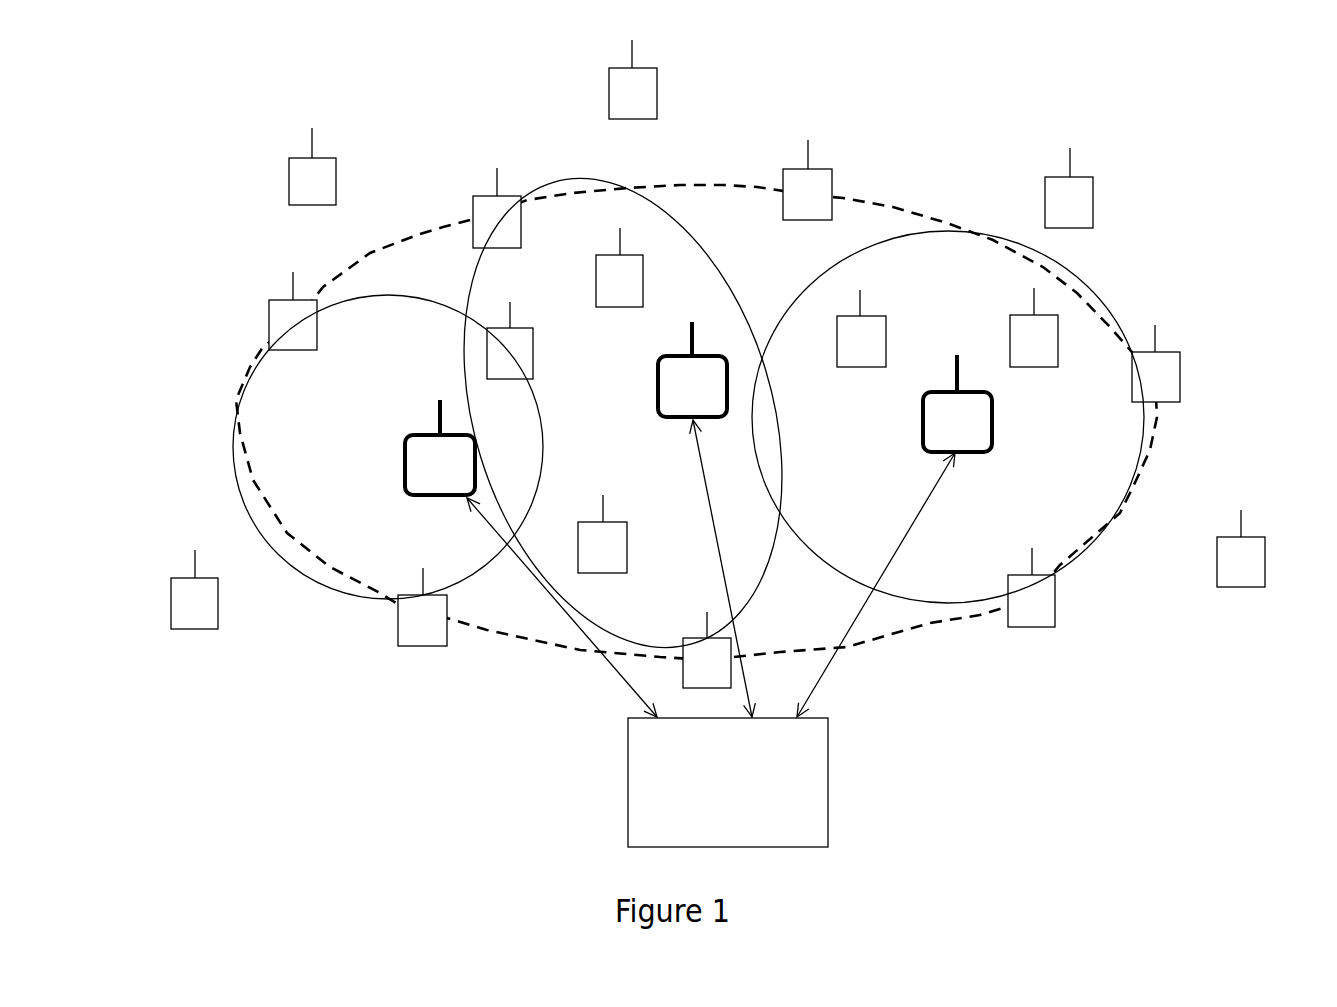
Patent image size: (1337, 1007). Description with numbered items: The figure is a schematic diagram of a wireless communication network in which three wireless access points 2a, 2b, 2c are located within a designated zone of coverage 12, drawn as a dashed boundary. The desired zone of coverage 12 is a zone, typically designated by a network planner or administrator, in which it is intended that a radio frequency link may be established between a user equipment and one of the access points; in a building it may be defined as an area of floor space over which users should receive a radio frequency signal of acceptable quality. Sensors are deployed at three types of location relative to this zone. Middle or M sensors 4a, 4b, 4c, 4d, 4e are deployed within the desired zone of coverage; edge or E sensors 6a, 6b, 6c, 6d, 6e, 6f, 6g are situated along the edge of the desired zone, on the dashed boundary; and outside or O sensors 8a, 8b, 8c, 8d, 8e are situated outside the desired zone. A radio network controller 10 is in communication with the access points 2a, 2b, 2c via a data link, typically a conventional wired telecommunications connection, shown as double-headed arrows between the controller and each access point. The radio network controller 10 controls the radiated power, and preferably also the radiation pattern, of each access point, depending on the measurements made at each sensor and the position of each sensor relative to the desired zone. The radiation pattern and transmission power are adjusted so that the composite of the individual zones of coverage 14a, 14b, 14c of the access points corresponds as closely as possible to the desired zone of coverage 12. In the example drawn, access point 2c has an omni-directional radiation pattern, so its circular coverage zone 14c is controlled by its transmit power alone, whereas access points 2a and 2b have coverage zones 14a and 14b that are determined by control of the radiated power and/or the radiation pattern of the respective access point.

The access point 2a is at (393, 455).
The access point 2b is at (650, 393).
The access point 2c is at (997, 420).
The middle sensor 4a is at (540, 353).
The middle sensor 4b is at (648, 283).
The middle sensor 4c is at (1010, 350).
The middle sensor 4d is at (868, 315).
The middle sensor 4e is at (578, 528).
The edge sensor 6a is at (393, 612).
The edge sensor 6b is at (273, 305).
The edge sensor 6c is at (478, 195).
The edge sensor 6d is at (842, 173).
The edge sensor 6e is at (1182, 372).
The edge sensor 6f is at (1060, 595).
The edge sensor 6g is at (670, 642).
The outside sensor 8a is at (162, 600).
The outside sensor 8b is at (280, 178).
The outside sensor 8c is at (665, 88).
The outside sensor 8d is at (1092, 167).
The outside sensor 8e is at (1263, 528).
The radio network controller 10 is at (837, 800).
The designated zone of coverage 12 is at (695, 183).
The zone of coverage 14a is at (235, 478).
The zone of coverage 14b is at (772, 543).
The zone of coverage 14c is at (815, 547).